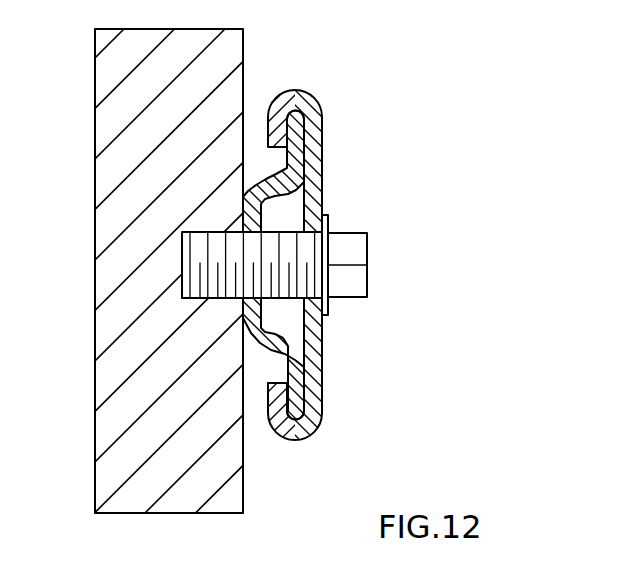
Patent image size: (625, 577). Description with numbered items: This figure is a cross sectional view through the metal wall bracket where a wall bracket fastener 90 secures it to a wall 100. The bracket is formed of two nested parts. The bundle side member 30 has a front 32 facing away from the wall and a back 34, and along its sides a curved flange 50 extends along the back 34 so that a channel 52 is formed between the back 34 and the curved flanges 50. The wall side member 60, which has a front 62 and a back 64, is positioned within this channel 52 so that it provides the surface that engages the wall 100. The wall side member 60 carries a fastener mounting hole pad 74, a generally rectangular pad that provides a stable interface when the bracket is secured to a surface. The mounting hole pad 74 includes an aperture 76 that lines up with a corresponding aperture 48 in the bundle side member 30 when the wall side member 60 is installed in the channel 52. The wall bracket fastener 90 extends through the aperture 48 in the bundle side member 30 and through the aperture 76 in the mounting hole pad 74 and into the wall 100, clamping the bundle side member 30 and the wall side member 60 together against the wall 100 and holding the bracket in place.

The wall 100 is at (221, 58).
The bundle side member 30 is at (323, 135).
The front 32 is at (323, 383).
The wall side member 60 is at (263, 162).
The back 64 is at (288, 367).
The fastener mounting hole pad 74 is at (252, 316).
The back 34 is at (300, 397).
The channel 52 is at (297, 417).
The curved flange 50 is at (283, 391).
The front 62 is at (305, 362).
The aperture 76 is at (256, 233).
The aperture 48 is at (312, 316).
The wall bracket fastener 90 is at (360, 254).